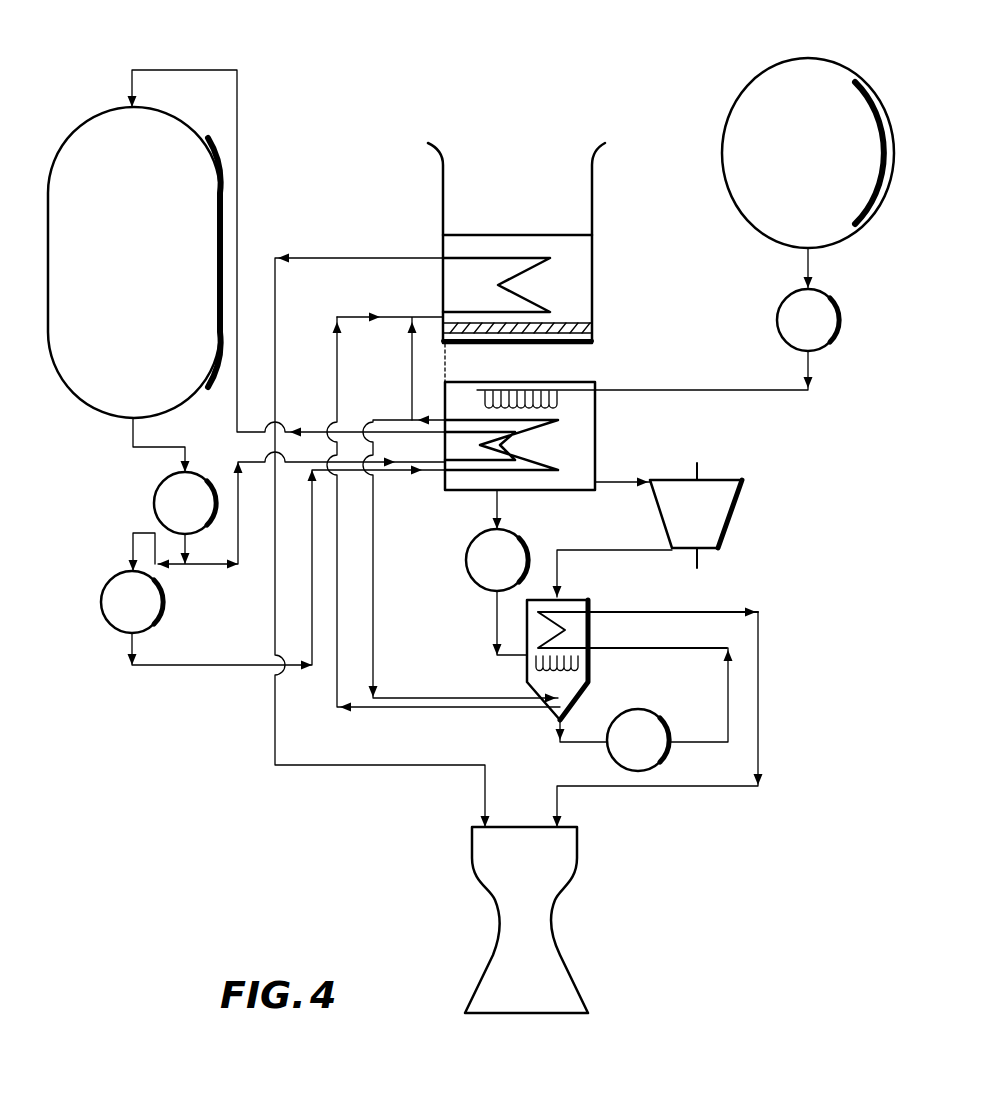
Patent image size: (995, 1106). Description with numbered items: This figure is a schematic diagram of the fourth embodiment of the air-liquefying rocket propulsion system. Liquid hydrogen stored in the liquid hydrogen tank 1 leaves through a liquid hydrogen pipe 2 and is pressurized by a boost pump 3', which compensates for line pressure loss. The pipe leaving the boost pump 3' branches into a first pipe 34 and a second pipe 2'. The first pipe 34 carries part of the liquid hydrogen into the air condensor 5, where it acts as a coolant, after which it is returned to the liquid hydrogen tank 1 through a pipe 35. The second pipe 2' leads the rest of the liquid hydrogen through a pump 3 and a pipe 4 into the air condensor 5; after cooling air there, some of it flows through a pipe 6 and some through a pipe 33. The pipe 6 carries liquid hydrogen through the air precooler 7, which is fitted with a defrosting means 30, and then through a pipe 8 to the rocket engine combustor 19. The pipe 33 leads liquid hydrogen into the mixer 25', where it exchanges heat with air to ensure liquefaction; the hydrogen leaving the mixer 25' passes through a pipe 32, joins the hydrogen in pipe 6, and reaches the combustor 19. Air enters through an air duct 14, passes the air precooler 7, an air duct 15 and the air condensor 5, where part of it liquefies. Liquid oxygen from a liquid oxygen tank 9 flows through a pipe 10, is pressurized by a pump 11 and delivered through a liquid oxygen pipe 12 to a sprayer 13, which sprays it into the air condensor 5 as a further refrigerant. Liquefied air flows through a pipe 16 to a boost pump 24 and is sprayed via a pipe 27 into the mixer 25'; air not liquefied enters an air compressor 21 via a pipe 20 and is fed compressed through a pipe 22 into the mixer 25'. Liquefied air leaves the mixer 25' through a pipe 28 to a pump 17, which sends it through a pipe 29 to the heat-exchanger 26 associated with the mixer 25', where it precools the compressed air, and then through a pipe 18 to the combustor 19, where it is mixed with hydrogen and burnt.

The liquid hydrogen tank 1 is at (120, 122).
The liquid hydrogen pipe 2 is at (133, 445).
The second pipe 2' is at (110, 552).
The pump 3 is at (99, 602).
The boost pump 3' is at (185, 476).
The pipe 4 is at (312, 600).
The air condensor 5 is at (582, 436).
The pipe 6 is at (412, 355).
The air precooler 7 is at (592, 262).
The pipe 8 is at (275, 625).
The liquid oxygen tank 9 is at (740, 105).
The pipe 10 is at (815, 262).
The pump 11 is at (840, 325).
The liquid oxygen pipe 12 is at (720, 392).
The liquid oxygen sprayer 13 is at (537, 390).
The air duct 14 is at (590, 205).
The air duct 15 is at (573, 360).
The pipe 16 is at (505, 505).
The pump 17 is at (665, 756).
The pipe 18 is at (650, 788).
The rocket engine combustor 19 is at (578, 862).
The pipe 20 is at (625, 480).
The air compressor 21 is at (735, 510).
The pipe 22 is at (610, 552).
The boost pump 24 is at (468, 545).
The mixer 25' is at (593, 660).
The heat-exchanger 26 is at (598, 628).
The pipe 27 is at (497, 632).
The pipe 28 is at (568, 745).
The pipe 29 is at (728, 697).
The defrosting means 30 is at (592, 330).
The pipe 32 is at (357, 708).
The pipe 33 is at (373, 608).
The first pipe 34 is at (238, 540).
The pipe 35 is at (190, 70).